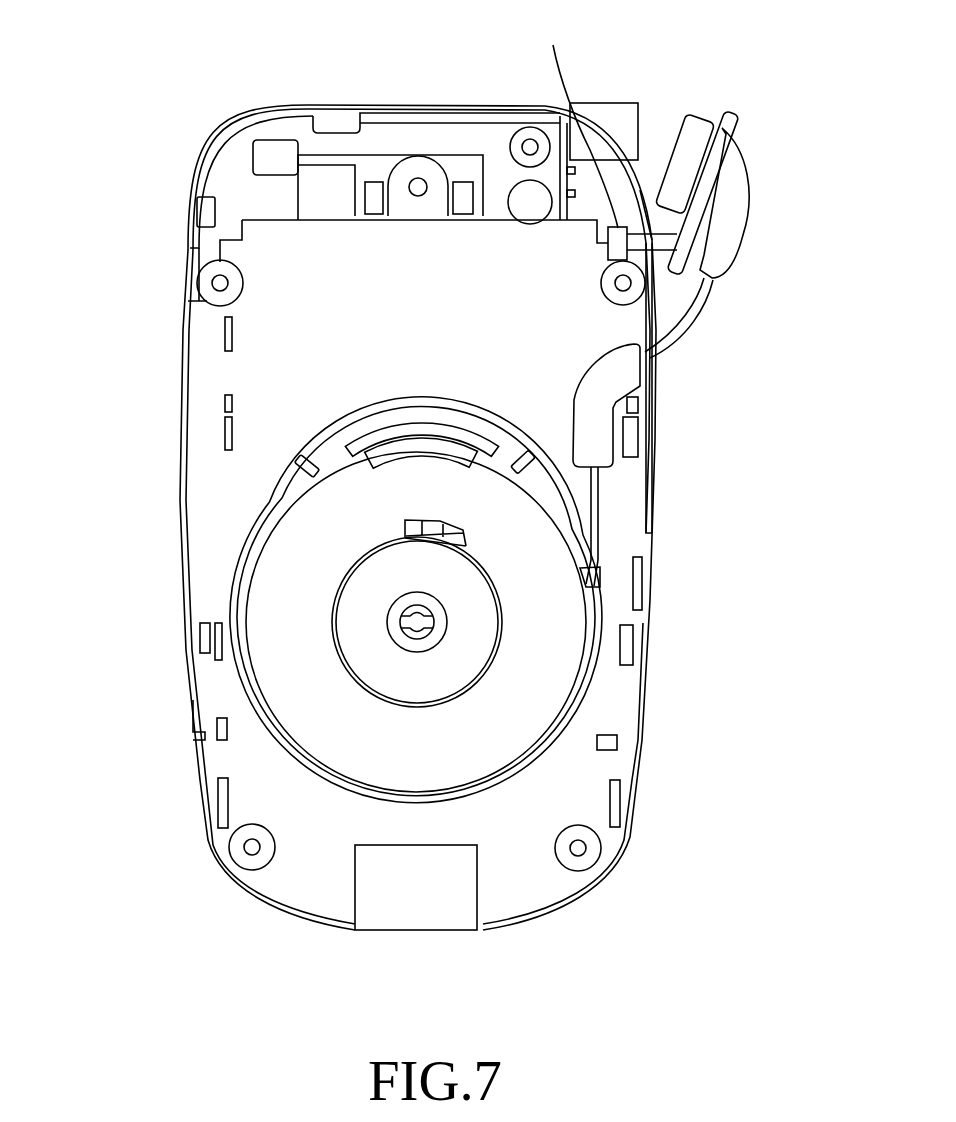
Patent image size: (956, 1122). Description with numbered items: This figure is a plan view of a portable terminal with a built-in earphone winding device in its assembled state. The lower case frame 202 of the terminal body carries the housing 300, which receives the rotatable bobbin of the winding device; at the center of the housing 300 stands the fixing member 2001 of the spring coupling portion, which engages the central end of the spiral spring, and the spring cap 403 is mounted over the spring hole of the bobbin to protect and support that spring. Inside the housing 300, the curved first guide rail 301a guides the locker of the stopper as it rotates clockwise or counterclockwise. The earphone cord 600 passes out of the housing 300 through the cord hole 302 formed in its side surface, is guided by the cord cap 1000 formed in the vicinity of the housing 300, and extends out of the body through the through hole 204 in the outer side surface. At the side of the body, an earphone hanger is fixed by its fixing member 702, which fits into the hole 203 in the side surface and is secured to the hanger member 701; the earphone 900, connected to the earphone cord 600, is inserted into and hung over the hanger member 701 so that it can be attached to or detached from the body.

The lower case frame 202 is at (183, 340).
The hole 203 is at (650, 192).
The through hole 204 is at (653, 357).
The housing 300 is at (263, 511).
The first guide rail 301a is at (315, 452).
The cord hole 302 is at (598, 580).
The spring cap 403 is at (262, 610).
The earphone cord 600 is at (703, 297).
The hanger member 701 is at (730, 113).
The fixing member 702 is at (606, 135).
The earphone 900 is at (737, 203).
The cord cap 1000 is at (605, 438).
The fixing member 2001 is at (403, 633).